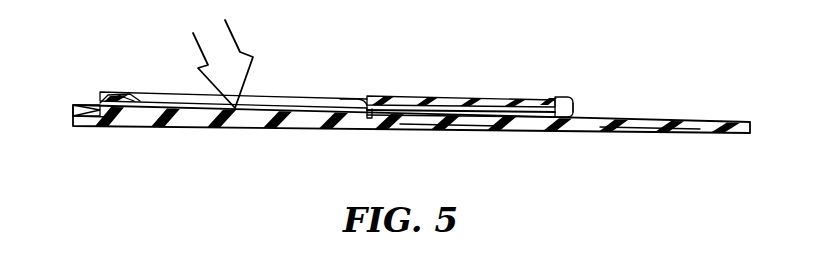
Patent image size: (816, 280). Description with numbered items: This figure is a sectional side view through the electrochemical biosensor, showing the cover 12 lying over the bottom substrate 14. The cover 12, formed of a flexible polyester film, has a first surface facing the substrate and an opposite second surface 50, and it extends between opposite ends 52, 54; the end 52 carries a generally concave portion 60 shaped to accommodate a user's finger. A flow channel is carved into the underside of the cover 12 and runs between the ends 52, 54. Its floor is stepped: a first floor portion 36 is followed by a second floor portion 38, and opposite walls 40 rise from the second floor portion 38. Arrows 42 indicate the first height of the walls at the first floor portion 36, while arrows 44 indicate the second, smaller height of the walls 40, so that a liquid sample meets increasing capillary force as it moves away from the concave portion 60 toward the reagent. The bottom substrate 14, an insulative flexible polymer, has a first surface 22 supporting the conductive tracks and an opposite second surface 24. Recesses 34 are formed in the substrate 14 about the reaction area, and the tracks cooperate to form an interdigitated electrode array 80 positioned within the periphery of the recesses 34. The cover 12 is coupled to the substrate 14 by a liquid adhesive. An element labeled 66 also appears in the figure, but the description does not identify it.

The cover 12 is at (553, 98).
The bottom substrate 14 is at (653, 134).
The first surface 22 is at (676, 121).
The second surface 24 is at (497, 132).
The recesses 34 is at (372, 126).
The first floor portion 36 is at (95, 101).
The second floor portion 38 is at (113, 101).
The walls 40 is at (172, 108).
The arrows 42 is at (235, 41).
The arrows 44 is at (320, 110).
The second surface 50 is at (442, 98).
The end 52 is at (71, 107).
The end 54 is at (576, 102).
The concave portion 60 is at (324, 100).
The bottom surface 66 is at (110, 127).
The interdigitated electrode array 80 is at (418, 120).